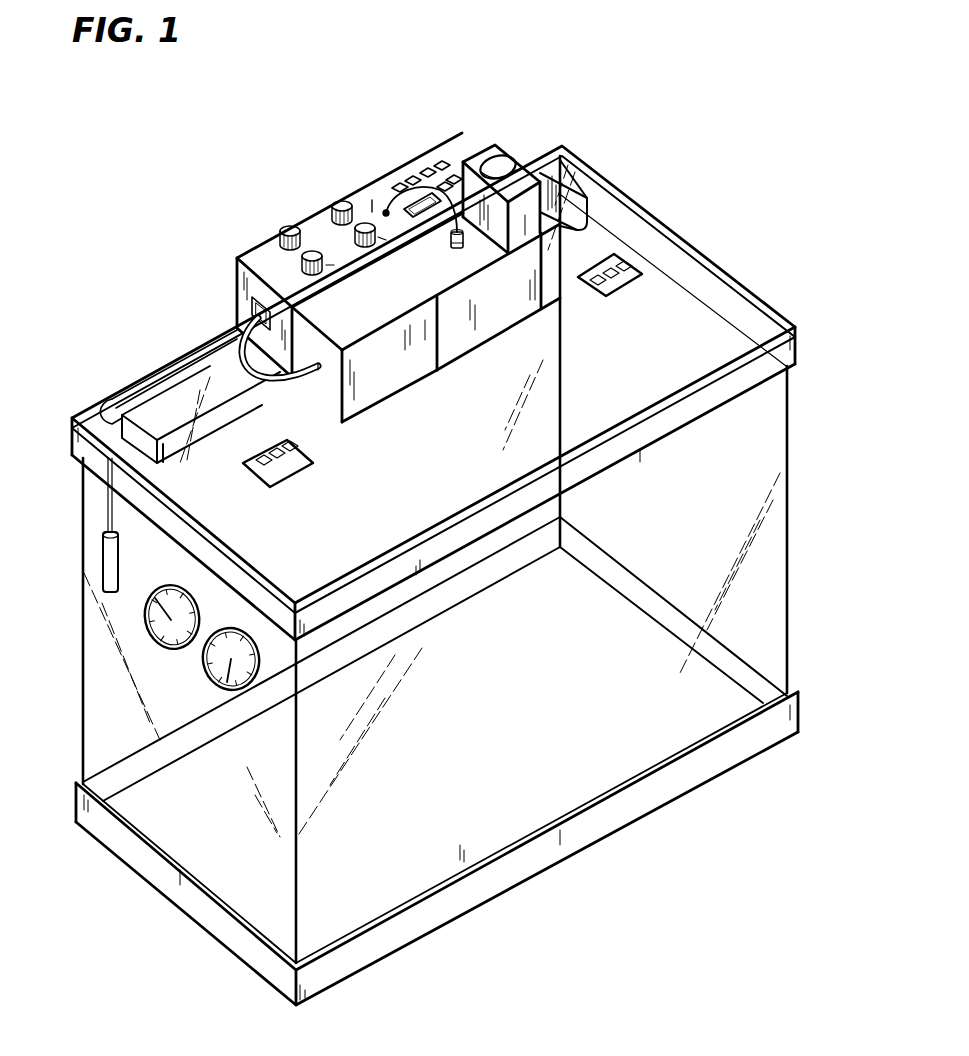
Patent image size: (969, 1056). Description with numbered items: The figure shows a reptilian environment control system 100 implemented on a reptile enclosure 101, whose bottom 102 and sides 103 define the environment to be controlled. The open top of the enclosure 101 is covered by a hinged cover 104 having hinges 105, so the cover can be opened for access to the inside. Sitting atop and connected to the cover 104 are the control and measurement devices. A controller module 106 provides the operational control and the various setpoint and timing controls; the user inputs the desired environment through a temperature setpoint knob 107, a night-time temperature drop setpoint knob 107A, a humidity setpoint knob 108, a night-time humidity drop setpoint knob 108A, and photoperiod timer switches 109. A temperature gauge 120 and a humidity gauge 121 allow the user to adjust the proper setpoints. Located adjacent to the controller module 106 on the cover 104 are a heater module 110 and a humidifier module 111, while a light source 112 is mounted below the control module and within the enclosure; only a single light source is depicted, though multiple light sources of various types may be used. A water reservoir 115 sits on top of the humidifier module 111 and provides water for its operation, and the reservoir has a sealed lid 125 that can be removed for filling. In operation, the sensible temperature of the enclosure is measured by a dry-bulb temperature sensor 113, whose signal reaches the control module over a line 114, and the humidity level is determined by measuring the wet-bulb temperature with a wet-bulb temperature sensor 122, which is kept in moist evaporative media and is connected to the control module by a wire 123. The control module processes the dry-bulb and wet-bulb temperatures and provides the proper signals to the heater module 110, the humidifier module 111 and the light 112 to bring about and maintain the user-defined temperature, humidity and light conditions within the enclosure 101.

The reptilian environment control system 100 is at (100, 238).
The enclosure 101 is at (83, 728).
The bottom 102 is at (520, 762).
The sides 103 is at (113, 697).
The hinged cover 104 is at (670, 297).
The hinges 105 is at (613, 257).
The controller module 106 is at (400, 165).
The temperature setpoint knob 107 is at (312, 252).
The night-time temperature drop setpoint knob 107A is at (283, 227).
The humidity setpoint knob 108 is at (365, 224).
The night-time humidity drop setpoint knob 108A is at (338, 203).
The photoperiod timer switches 109 is at (452, 174).
The heater module 110 is at (393, 363).
The humidifier module 111 is at (503, 298).
The light source 112 is at (552, 178).
The dry-bulb temperature sensor 113 is at (100, 548).
The line 114 is at (155, 370).
The water reservoir 115 is at (496, 159).
The temperature gauge 120 is at (160, 614).
The humidity gauge 121 is at (217, 666).
The wet-bulb temperature sensor 122 is at (452, 238).
The wire 123 is at (424, 162).
The sealed lid 125 is at (497, 160).